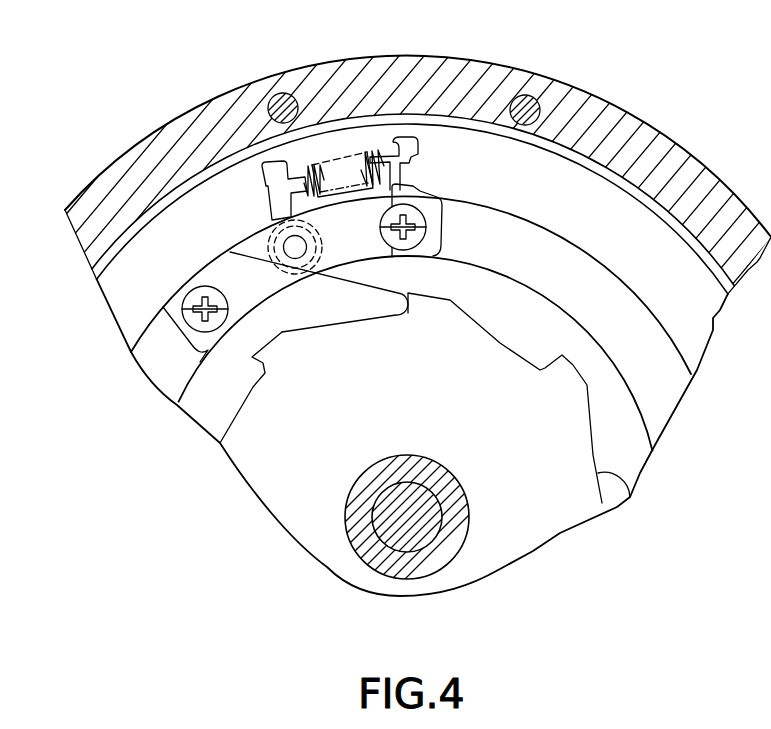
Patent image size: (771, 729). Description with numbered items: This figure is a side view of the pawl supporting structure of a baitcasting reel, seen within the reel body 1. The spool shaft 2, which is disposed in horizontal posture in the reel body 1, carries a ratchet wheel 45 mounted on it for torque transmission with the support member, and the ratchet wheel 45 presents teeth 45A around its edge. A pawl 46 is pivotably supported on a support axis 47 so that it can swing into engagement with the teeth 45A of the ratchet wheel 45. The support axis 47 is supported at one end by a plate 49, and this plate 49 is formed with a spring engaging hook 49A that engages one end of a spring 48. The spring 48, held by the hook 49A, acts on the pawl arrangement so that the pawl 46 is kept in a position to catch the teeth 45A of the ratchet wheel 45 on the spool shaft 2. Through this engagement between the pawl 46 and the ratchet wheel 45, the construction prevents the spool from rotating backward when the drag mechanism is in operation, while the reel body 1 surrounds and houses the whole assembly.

The reel body 1 is at (609, 106).
The spool shaft 2 is at (417, 537).
The ratchet wheel 45 is at (626, 492).
The teeth of the ratchet wheel 45A is at (450, 300).
The pawl 46 is at (352, 305).
The support axis 47 is at (284, 240).
The spring 48 is at (360, 176).
The plate 49 is at (250, 296).
The spring engaging hook 49A is at (417, 178).